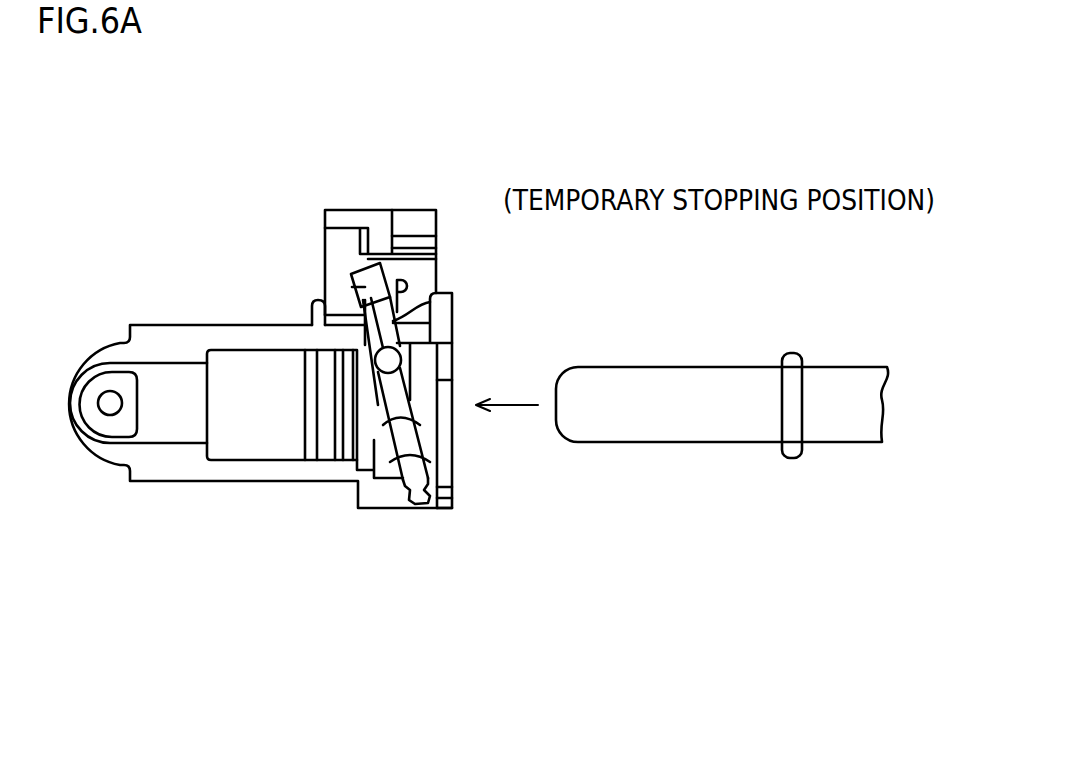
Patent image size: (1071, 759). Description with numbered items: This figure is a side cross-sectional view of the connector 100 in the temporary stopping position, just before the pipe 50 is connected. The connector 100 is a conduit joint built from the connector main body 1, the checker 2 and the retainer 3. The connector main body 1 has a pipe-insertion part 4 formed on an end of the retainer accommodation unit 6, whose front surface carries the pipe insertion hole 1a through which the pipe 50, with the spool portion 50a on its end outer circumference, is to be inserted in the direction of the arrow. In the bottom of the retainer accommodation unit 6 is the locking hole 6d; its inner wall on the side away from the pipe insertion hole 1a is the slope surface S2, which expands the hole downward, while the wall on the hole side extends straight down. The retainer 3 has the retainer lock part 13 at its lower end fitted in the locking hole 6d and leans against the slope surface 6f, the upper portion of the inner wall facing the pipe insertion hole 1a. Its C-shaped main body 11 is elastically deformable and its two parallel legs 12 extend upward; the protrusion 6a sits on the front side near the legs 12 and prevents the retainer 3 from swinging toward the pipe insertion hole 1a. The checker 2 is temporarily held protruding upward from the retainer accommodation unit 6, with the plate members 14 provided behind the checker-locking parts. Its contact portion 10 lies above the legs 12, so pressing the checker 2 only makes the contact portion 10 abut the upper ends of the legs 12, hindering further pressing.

The connector 100 is at (386, 179).
The connector main body 1 is at (257, 484).
The pipe insertion hole 1a is at (458, 362).
The checker 2 is at (438, 208).
The retainer 3 is at (428, 385).
The pipe-insertion part 4 is at (233, 324).
The retainer accommodation unit 6 is at (448, 300).
The protrusion 6a is at (440, 318).
The locking hole 6d is at (440, 507).
The slope surface 6f is at (352, 287).
The contact portion 10 is at (396, 250).
The C-shaped main body 11 is at (430, 412).
The legs 12 is at (358, 268).
The retainer lock part 13 is at (447, 490).
The plate members 14 is at (312, 312).
The slope surface S2 is at (407, 498).
The pipe 50 is at (716, 350).
The spool portion 50a is at (793, 458).